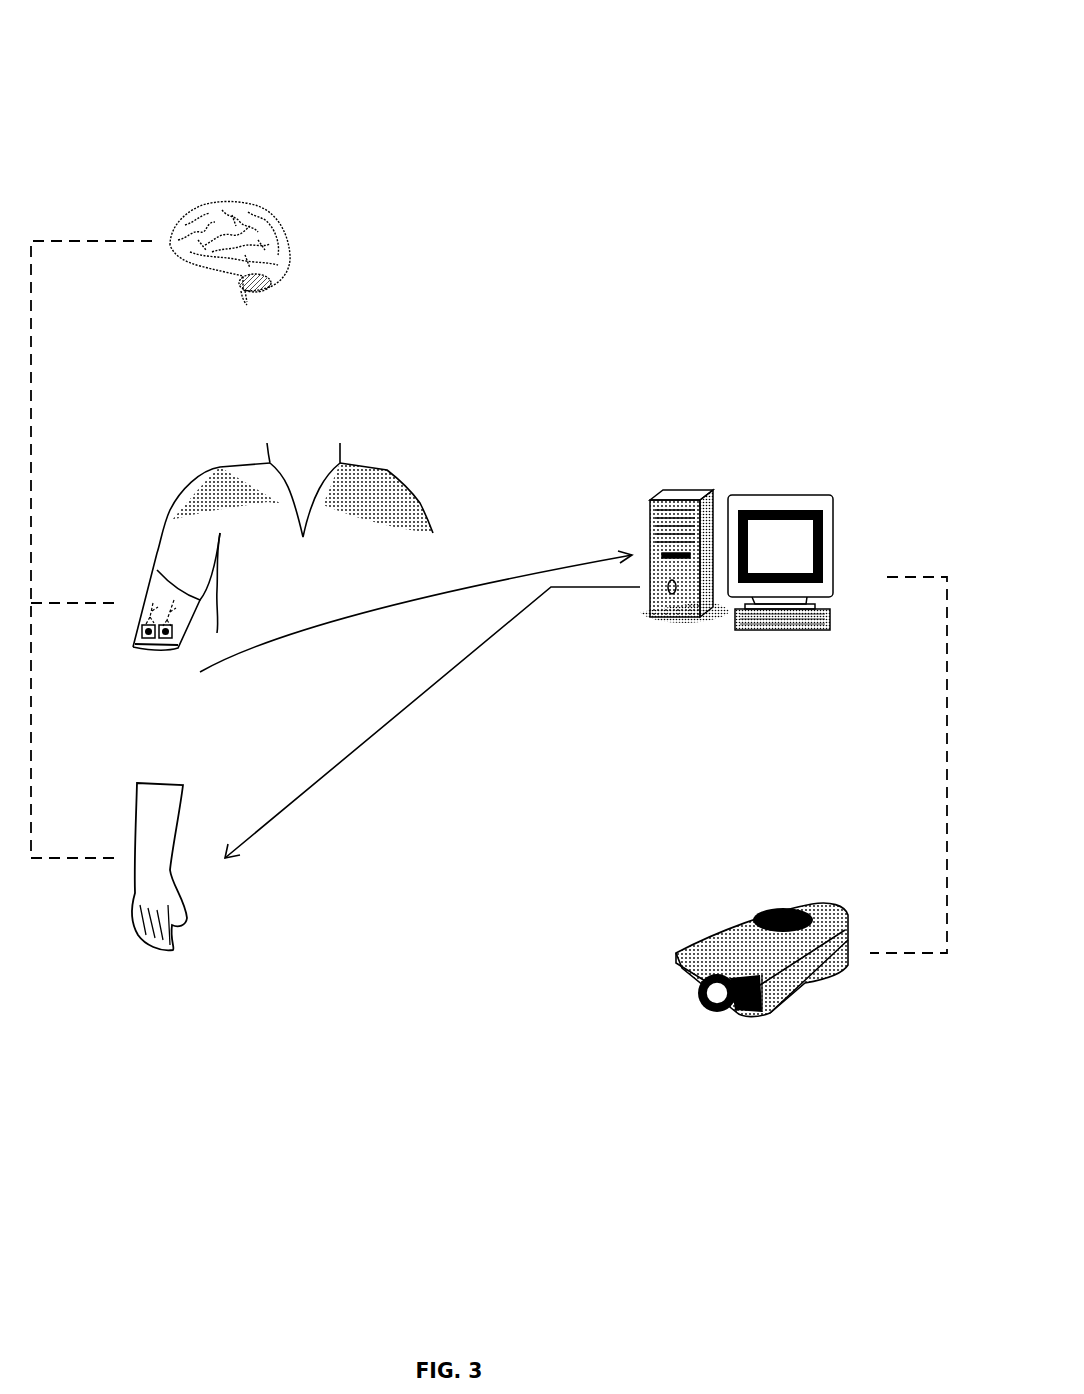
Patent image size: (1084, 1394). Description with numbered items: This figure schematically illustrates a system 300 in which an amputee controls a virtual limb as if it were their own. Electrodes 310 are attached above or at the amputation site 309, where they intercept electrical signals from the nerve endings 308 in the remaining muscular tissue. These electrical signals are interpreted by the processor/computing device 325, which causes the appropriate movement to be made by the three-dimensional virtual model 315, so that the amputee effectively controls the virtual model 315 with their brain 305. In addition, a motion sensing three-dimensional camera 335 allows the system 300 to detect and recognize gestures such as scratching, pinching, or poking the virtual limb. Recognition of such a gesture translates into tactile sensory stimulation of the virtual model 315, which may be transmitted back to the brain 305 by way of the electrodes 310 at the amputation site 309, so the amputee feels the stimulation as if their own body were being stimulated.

The system 300 is at (838, 43).
The brain 305 is at (246, 284).
The nerve endings 308 is at (153, 603).
The amputation site 309 is at (145, 657).
The electrodes 310 is at (150, 639).
The 3D virtual model 315 is at (173, 897).
The processor/computing device 325 is at (739, 605).
The motion sensing 3D camera 335 is at (762, 1008).